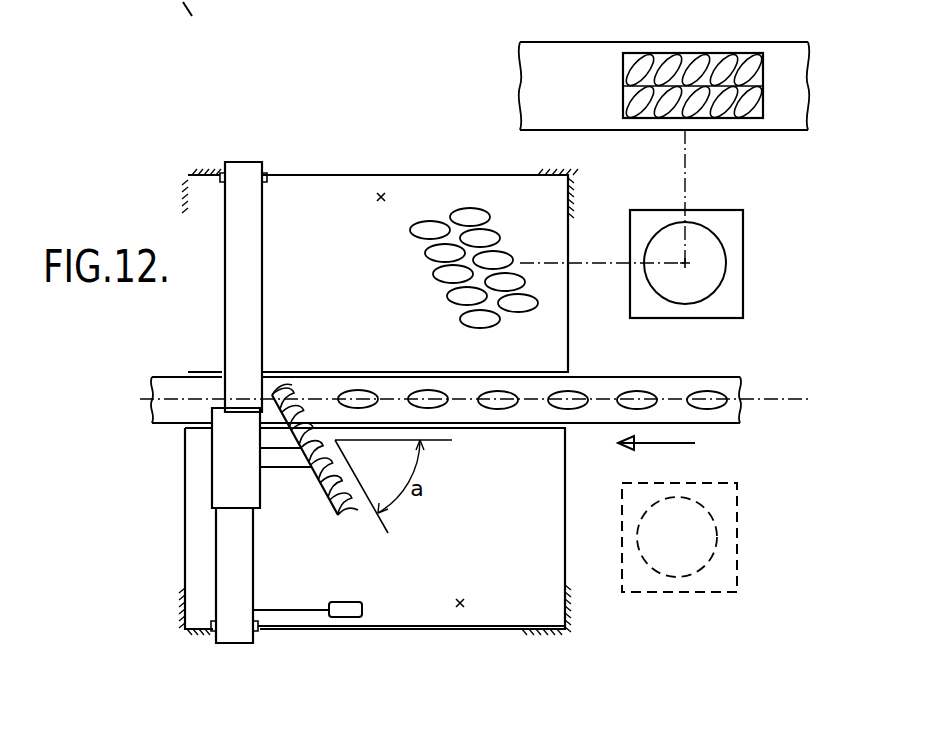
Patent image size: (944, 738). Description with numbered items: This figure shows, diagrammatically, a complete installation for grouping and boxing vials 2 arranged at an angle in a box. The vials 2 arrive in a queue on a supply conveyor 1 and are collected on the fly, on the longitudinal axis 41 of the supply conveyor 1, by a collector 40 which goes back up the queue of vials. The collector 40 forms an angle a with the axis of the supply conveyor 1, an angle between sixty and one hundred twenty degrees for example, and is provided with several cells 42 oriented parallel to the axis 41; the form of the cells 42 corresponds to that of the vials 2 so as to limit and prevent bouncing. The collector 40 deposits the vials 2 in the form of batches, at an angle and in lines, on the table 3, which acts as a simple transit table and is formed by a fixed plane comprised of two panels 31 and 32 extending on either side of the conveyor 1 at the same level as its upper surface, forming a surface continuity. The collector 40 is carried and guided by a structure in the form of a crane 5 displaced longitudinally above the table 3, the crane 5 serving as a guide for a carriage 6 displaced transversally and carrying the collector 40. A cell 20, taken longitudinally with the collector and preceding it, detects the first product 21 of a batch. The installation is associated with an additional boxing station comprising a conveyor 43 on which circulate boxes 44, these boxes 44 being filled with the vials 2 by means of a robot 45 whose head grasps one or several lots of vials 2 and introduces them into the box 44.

The supply conveyor 1 is at (677, 385).
The vials 2 is at (470, 217).
The table 3 is at (336, 175).
The crane 5 is at (242, 178).
The carriage 6 is at (228, 460).
The cell 20 is at (345, 614).
The first product 21 is at (697, 68).
The panel 31 is at (383, 195).
The panel 32 is at (460, 604).
The collector 40 is at (322, 479).
The longitudinal axis 41 is at (758, 400).
The cells 42 is at (274, 394).
The conveyor 43 is at (783, 113).
The boxes 44 is at (762, 70).
The robot 45 is at (745, 252).